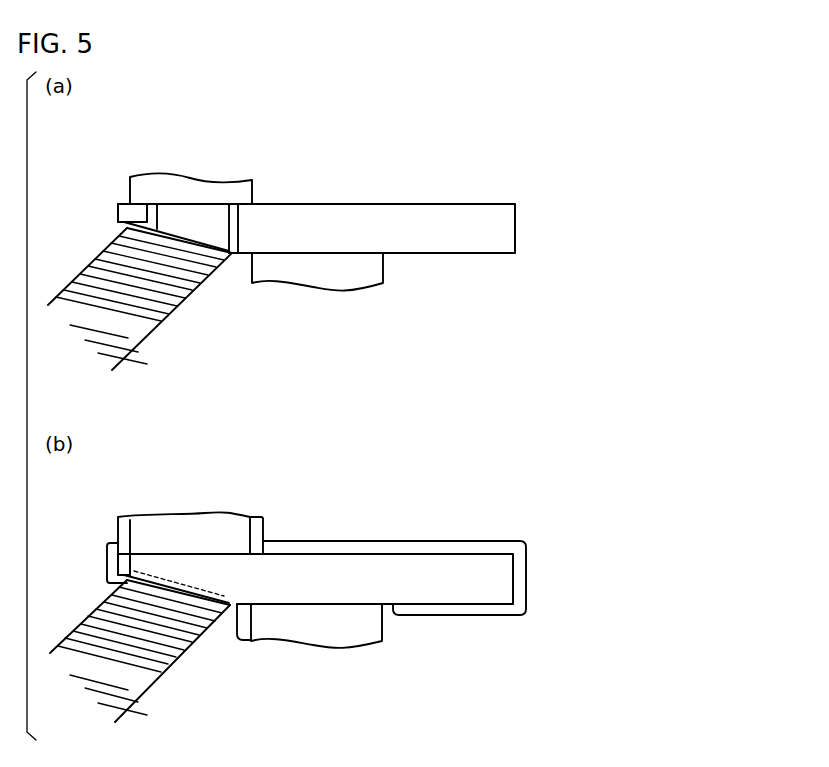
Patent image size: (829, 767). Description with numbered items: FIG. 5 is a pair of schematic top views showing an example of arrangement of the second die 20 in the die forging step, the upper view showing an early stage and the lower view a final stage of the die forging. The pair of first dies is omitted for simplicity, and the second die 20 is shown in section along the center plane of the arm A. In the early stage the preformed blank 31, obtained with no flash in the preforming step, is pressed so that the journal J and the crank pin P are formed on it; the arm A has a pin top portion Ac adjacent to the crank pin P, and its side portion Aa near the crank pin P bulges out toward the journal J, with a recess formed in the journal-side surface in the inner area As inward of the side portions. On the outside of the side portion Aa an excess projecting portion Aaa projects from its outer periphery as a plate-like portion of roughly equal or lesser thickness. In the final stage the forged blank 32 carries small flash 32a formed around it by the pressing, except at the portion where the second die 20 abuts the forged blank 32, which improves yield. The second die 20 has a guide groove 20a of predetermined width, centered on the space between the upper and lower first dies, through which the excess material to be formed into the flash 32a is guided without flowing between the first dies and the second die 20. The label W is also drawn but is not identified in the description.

The second die 20 is at (99, 242).
The guide groove 20a is at (95, 265).
The preformed blank 31 is at (372, 189).
The forged blank 32 is at (375, 524).
The flash 32a is at (430, 549).
The arm A is at (290, 216).
The side portion Aa is at (197, 567).
The excess projecting portion Aaa is at (187, 215).
The pin top portion Ac is at (122, 203).
The inner area As is at (208, 253).
The crank pin P is at (235, 195).
The workpiece / welded portion W is at (480, 216).
The journal J is at (365, 269).